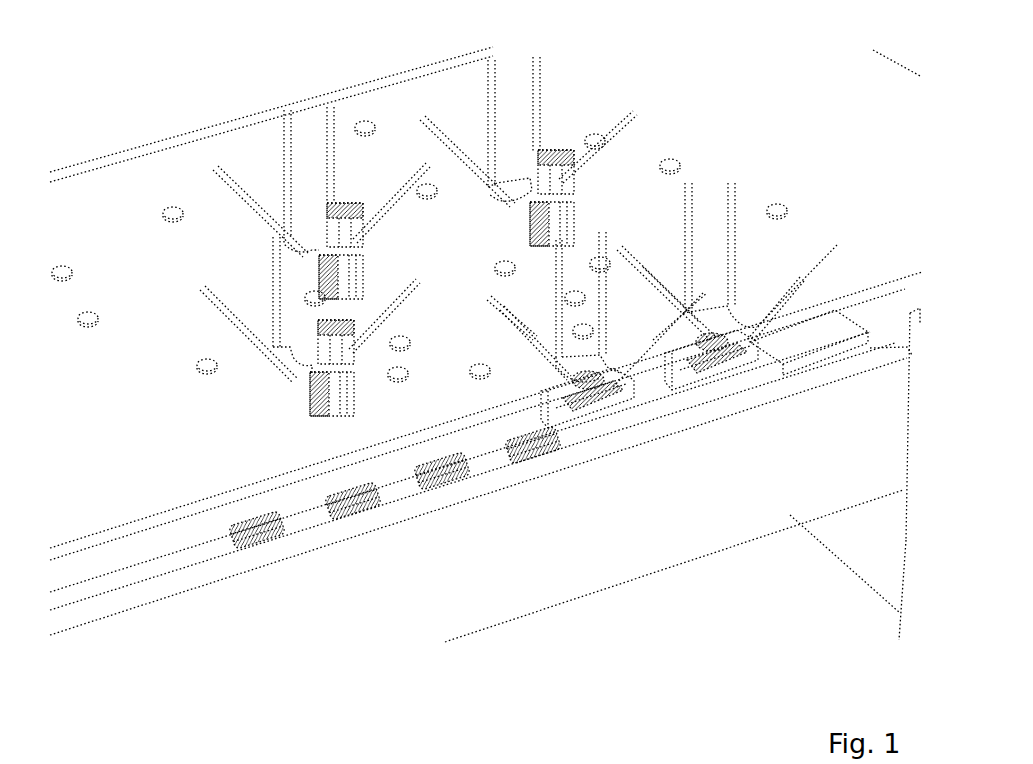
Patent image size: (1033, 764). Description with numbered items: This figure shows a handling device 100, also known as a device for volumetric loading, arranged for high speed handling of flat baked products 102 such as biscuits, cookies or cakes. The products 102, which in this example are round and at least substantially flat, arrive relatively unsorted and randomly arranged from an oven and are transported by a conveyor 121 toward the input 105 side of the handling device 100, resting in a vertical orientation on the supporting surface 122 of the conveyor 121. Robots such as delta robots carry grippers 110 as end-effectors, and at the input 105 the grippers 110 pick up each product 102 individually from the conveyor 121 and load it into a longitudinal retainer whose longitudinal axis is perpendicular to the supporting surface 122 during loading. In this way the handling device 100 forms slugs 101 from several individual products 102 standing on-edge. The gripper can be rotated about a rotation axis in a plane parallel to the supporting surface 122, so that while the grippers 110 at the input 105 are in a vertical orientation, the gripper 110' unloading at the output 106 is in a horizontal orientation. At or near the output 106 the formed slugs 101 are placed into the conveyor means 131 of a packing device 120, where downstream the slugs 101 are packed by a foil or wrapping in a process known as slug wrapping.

The handling device 100 is at (135, 97).
The slug 101 is at (458, 485).
The flat baked product 102 is at (65, 268).
The input 105 is at (601, 86).
The output 106 is at (613, 443).
The gripper 110 is at (413, 396).
The gripper 110' is at (772, 393).
The packing device 120 is at (95, 653).
The conveyor 121 is at (861, 277).
The supporting surface 122 is at (747, 118).
The conveyor means 131 is at (328, 533).